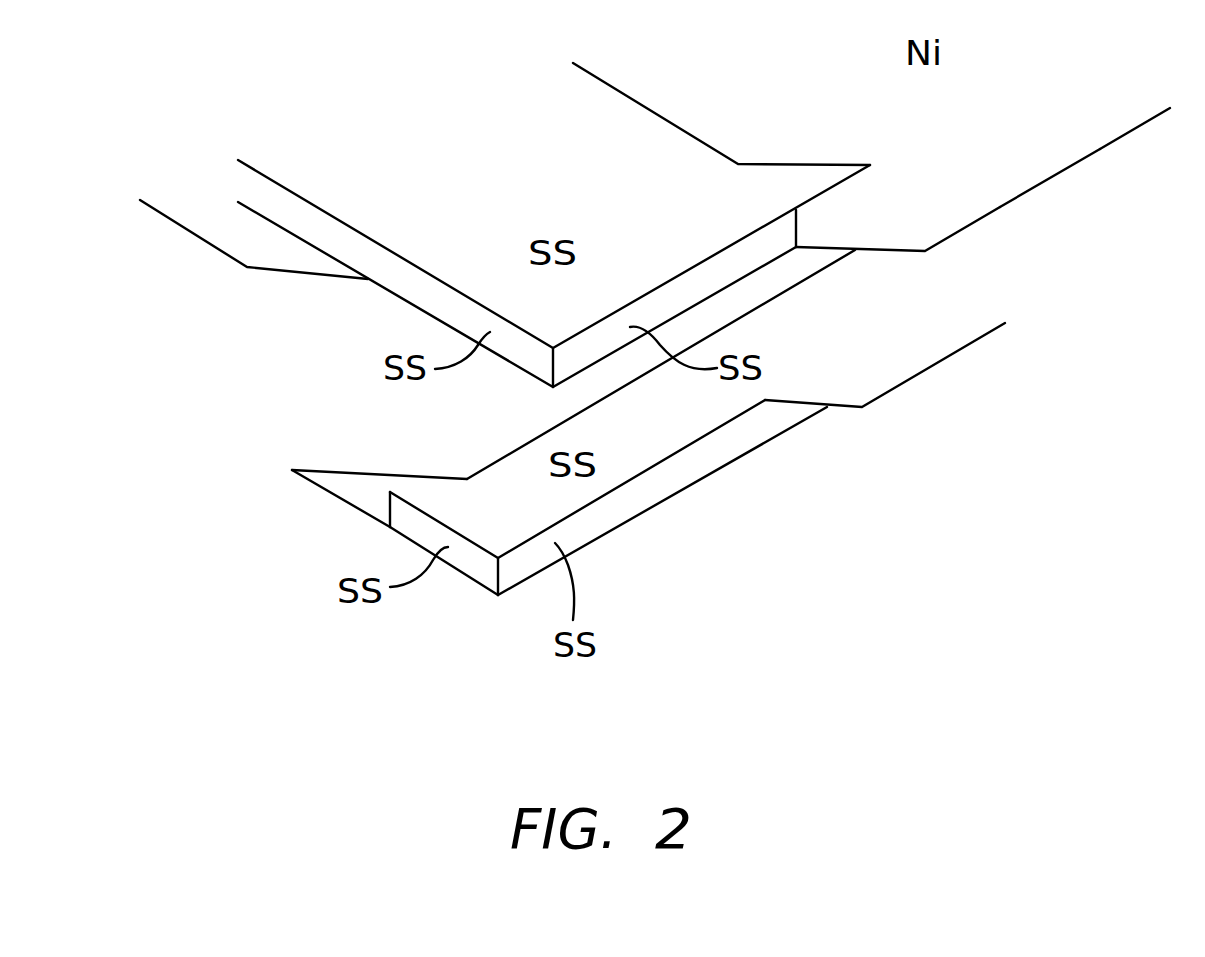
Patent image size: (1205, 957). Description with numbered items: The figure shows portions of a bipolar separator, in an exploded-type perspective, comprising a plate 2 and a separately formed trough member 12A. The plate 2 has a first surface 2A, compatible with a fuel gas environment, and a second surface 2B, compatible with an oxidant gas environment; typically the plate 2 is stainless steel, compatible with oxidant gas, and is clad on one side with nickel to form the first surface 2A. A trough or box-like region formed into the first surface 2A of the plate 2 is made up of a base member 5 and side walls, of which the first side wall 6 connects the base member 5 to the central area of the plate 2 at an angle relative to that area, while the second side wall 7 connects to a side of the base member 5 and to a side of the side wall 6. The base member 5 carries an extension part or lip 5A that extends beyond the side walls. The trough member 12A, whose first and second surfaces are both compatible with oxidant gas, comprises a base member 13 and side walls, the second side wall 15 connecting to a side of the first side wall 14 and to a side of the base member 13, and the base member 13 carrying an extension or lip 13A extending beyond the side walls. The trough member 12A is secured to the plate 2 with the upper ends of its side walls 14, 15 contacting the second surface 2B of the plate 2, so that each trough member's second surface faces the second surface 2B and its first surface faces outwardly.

The plate 2 is at (1082, 98).
The first surface 2A is at (1013, 166).
The second surface 2B is at (967, 227).
The base member 5 is at (840, 178).
The extension part or lip 5A is at (798, 187).
The first side wall 6 is at (432, 295).
The second side wall 7 is at (720, 273).
The trough member 12A is at (472, 580).
The base member 13 is at (853, 323).
The extension or lip 13A is at (362, 490).
The first side wall 14 is at (640, 493).
The second side wall 15 is at (408, 520).